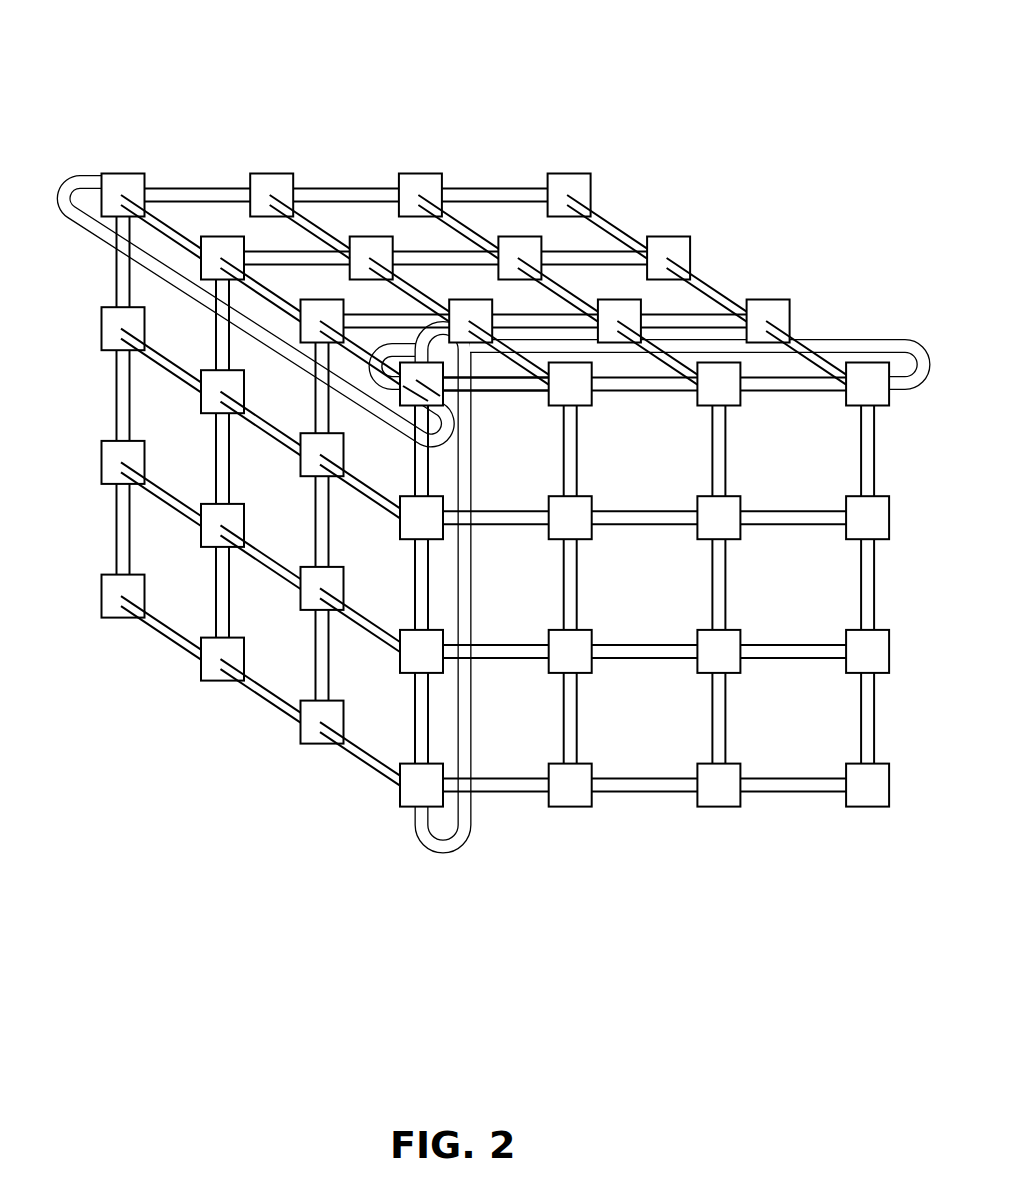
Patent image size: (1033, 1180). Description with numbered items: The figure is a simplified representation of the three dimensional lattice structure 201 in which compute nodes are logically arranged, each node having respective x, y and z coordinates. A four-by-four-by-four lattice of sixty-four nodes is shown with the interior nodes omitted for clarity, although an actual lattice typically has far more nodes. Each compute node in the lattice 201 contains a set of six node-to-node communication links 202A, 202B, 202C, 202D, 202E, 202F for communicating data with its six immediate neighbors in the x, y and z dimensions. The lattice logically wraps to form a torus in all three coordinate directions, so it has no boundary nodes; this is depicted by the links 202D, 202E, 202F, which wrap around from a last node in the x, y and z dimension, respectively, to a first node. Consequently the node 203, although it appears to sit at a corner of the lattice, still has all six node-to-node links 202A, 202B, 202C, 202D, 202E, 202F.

The three dimensional lattice structure 201 is at (604, 88).
The node-to-node communication link 202A is at (490, 391).
The node-to-node communication link 202B is at (414, 476).
The node-to-node communication link 202C is at (383, 344).
The node-to-node communication link 202D is at (884, 340).
The node-to-node communication link 202E is at (460, 849).
The node-to-node communication link 202F is at (57, 183).
The node 203 is at (400, 405).